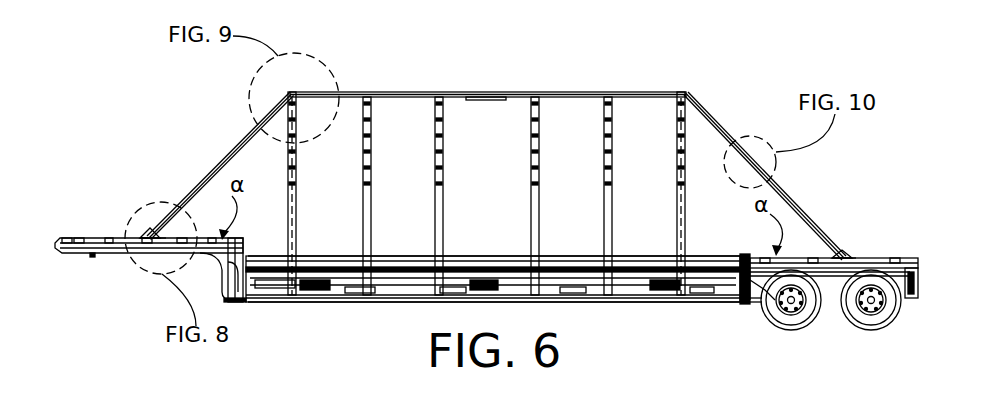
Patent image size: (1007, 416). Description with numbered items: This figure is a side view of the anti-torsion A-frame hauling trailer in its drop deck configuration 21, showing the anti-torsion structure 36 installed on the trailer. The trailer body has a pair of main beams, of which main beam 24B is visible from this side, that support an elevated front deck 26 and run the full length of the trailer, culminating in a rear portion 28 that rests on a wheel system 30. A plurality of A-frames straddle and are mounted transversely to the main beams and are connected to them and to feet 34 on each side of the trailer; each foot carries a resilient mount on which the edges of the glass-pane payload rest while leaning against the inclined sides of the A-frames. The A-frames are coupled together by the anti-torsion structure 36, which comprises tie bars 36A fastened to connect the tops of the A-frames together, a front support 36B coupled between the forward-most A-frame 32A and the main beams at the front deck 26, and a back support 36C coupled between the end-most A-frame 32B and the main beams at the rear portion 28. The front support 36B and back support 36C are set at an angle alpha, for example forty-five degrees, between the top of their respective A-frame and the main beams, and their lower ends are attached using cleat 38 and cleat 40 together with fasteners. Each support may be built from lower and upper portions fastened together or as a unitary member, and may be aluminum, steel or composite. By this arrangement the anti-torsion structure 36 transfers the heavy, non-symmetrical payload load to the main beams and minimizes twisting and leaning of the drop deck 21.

The drop deck configuration 21 is at (644, 320).
The main beam 24B is at (103, 266).
The elevated front deck 26 is at (92, 228).
The rear portion 28 is at (875, 243).
The wheel system 30 is at (902, 328).
The forward-most A-frame 32A is at (297, 196).
The end-most A-frame 32B is at (684, 128).
The feet 34 is at (362, 304).
The anti-torsion structure 36 is at (518, 48).
The tie bars 36A is at (350, 90).
The front support 36B is at (190, 170).
The back support 36C is at (738, 112).
The cleat 38 is at (132, 236).
The cleat 40 is at (848, 240).